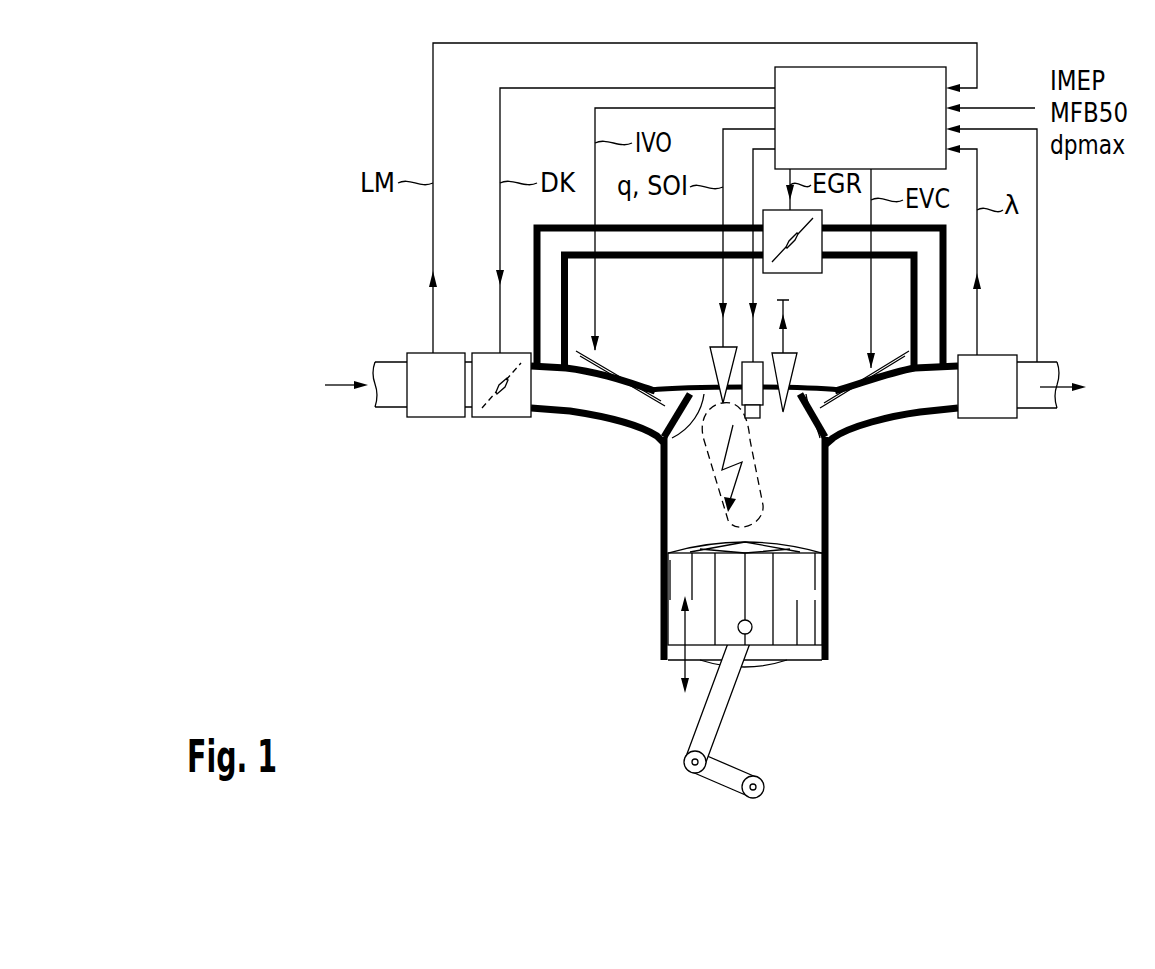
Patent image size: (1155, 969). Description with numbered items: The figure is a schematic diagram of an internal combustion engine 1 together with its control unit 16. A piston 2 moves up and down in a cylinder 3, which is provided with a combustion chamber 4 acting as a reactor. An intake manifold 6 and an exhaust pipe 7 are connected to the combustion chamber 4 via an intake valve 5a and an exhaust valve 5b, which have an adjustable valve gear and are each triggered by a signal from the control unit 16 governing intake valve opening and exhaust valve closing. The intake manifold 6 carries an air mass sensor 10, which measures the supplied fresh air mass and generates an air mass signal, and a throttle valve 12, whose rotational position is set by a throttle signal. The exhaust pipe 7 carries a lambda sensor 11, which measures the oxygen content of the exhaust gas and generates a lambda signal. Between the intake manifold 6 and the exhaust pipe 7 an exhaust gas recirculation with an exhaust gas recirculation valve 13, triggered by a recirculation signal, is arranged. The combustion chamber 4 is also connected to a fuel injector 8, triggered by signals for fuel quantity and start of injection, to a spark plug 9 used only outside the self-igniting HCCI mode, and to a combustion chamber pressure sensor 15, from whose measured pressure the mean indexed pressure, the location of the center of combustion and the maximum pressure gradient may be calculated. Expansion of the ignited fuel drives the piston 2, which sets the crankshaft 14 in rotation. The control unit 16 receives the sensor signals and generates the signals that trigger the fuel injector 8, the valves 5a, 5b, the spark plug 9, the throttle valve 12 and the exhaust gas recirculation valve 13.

The internal combustion engine 1 is at (538, 587).
The piston 2 is at (790, 605).
The cylinder 3 is at (827, 533).
The combustion chamber 4 is at (797, 496).
The intake valve 5a is at (617, 373).
The exhaust valve 5b is at (858, 382).
The intake manifold 6 is at (612, 420).
The exhaust pipe 7 is at (912, 418).
The fuel injector 8 is at (722, 360).
The spark plug 9 is at (758, 366).
The air mass sensor 10 is at (438, 402).
The lambda sensor 11 is at (978, 403).
The throttle valve 12 is at (502, 400).
The exhaust gas recirculation valve 13 is at (800, 265).
The crankshaft 14 is at (762, 784).
The combustion chamber pressure sensor 15 is at (807, 422).
The control unit 16 is at (875, 133).